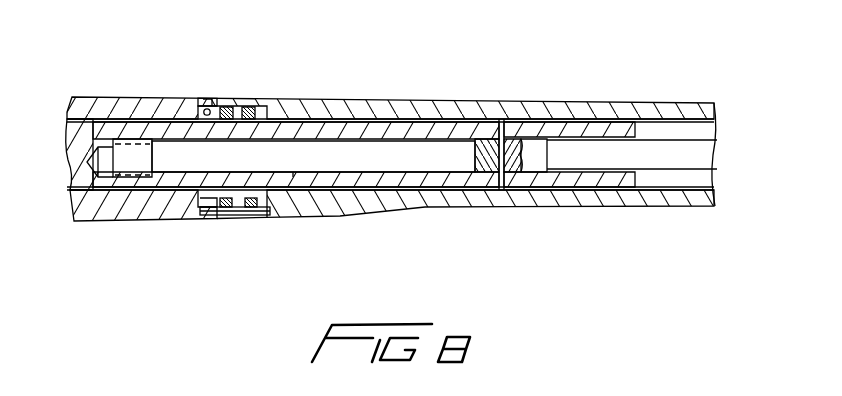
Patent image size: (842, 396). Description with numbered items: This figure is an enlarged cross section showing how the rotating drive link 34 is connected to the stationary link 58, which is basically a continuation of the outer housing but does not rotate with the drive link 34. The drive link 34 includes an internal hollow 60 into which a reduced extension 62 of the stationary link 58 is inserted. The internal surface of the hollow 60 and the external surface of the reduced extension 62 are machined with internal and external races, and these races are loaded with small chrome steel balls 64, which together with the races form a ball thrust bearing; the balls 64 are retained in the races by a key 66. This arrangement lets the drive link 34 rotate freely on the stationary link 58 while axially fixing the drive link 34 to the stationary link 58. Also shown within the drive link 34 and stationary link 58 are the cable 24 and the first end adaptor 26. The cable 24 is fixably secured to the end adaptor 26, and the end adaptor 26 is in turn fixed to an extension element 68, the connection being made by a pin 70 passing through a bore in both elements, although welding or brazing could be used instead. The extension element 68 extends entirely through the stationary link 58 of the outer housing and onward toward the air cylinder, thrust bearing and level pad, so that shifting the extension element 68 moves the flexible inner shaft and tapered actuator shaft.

The cable 24 is at (667, 155).
The first end adaptor 26 is at (433, 160).
The drive link 34 is at (340, 105).
The stationary link 58 is at (150, 112).
The internal hollow 60 is at (212, 103).
The reduced extension 62 is at (213, 215).
The seals 64 is at (232, 104).
The key 66 is at (257, 216).
The extension element 68 is at (84, 150).
The pin 70 is at (510, 122).